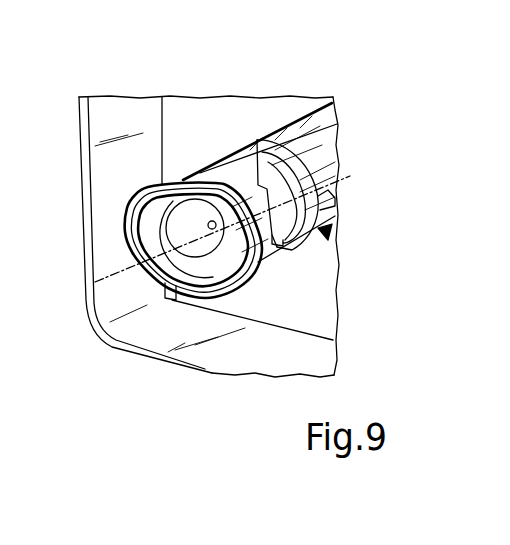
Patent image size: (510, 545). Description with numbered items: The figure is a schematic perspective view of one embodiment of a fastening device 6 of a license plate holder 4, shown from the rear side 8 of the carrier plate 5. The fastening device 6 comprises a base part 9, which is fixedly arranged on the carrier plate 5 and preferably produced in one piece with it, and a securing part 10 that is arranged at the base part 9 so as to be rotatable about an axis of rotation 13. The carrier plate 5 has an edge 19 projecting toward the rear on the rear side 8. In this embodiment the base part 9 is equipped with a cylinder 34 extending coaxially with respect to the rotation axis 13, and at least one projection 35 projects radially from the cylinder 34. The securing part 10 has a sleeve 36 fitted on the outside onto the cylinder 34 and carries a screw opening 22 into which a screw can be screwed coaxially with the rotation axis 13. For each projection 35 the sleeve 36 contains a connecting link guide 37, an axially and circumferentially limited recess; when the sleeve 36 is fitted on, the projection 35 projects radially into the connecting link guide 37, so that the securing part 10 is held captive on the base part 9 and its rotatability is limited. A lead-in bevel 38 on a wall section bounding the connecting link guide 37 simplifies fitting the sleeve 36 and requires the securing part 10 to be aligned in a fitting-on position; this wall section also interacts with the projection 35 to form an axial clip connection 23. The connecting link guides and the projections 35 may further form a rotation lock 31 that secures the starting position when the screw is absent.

The license plate holder 4 is at (362, 87).
The carrier plate 5 is at (330, 320).
The fastening device 6 is at (221, 110).
The rear side 8 is at (170, 115).
The base part 9 is at (322, 236).
The securing part 10 is at (273, 271).
The axis of rotation 13 is at (135, 248).
The edge 19 is at (79, 130).
The screw opening 22 is at (211, 231).
The axial clip connection 23 is at (317, 195).
The rotation lock 31 is at (297, 150).
The cylinder 34 is at (306, 124).
The projection 35 is at (262, 150).
The sleeve 36 is at (215, 176).
The connecting link guide 37 is at (290, 243).
The lead-in bevel 38 is at (338, 211).